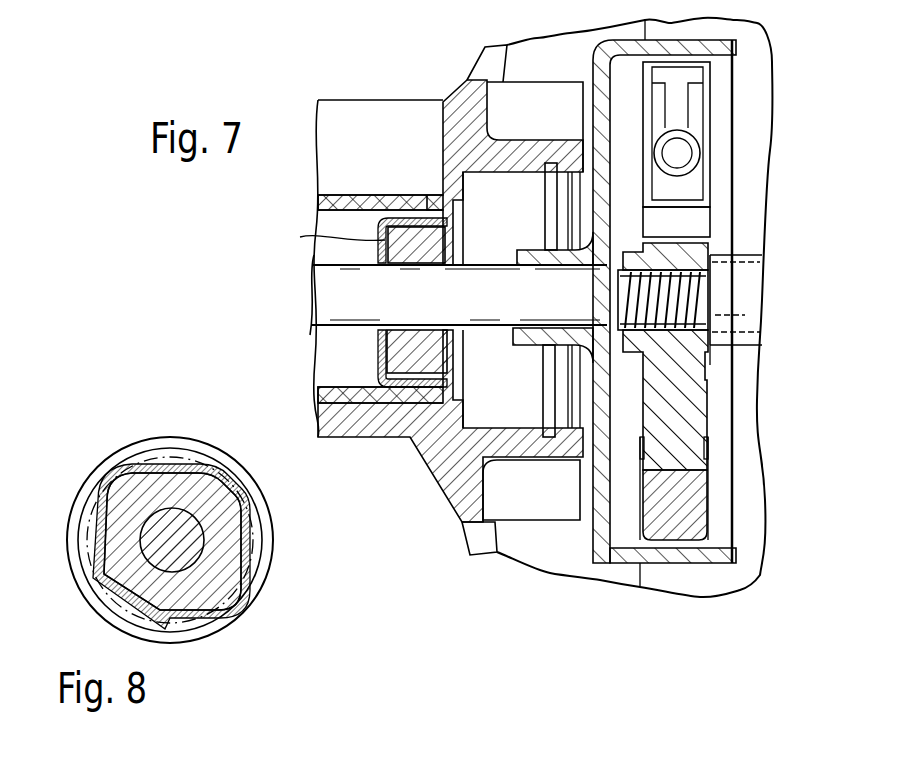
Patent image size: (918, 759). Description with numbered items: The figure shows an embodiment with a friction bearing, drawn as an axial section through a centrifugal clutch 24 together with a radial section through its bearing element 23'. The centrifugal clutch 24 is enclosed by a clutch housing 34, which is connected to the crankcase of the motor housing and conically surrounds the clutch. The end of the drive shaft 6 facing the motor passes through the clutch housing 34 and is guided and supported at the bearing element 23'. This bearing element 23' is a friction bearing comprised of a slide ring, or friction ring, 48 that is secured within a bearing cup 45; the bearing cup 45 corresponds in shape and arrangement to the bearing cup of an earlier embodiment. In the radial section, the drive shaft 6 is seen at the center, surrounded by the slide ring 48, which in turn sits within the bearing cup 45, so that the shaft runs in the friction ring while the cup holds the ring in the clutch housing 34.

In FIG. 7, the drive shaft 6 is at (335, 296).
In FIG. 8, the drive shaft 6 is at (170, 520).
In FIG. 7, the centrifugal clutch 24 is at (743, 131).
In FIG. 7, the clutch housing 34 is at (464, 133).
In FIG. 7, the bearing element 23' is at (419, 159).
In FIG. 7, the bearing cup 45 is at (427, 217).
In FIG. 8, the bearing cup 45 is at (248, 563).
In FIG. 7, the slide ring 48 is at (385, 240).
In FIG. 8, the slide ring 48 is at (203, 487).